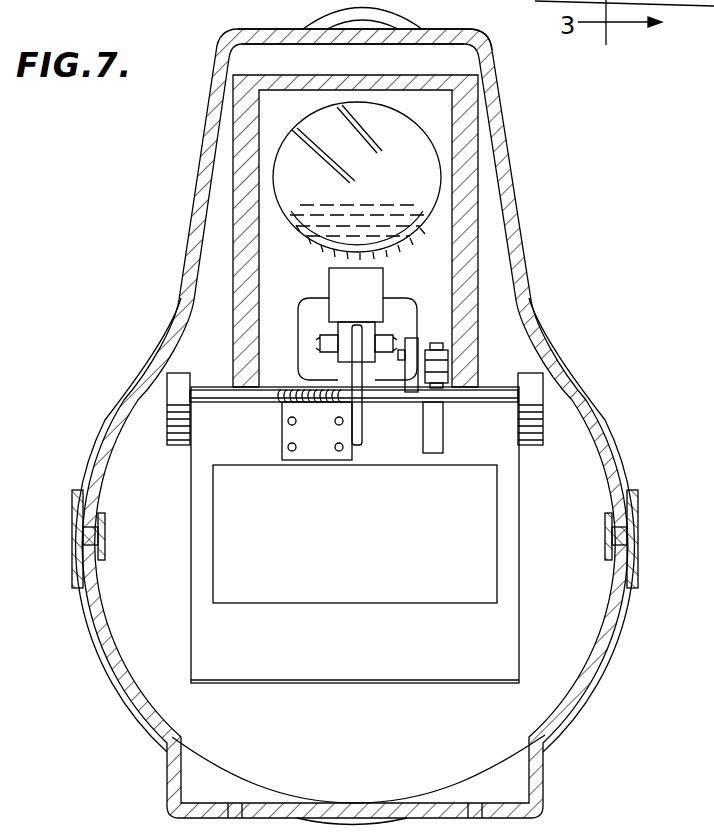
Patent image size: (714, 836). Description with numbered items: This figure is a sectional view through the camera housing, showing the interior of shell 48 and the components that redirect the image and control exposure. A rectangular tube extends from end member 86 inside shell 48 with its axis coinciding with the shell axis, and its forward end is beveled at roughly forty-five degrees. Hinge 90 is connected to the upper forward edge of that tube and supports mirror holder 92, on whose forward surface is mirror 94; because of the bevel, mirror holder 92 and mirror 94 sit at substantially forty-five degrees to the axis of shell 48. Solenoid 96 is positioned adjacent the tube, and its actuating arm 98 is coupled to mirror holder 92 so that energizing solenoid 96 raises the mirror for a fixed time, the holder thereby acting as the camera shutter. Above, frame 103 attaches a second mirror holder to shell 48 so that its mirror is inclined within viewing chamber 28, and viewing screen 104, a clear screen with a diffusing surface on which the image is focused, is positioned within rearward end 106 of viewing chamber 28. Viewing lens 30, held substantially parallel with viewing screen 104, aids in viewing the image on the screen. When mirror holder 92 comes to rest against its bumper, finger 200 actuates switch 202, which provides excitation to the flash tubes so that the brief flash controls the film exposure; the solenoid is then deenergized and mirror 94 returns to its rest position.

The viewing chamber 28 is at (484, 36).
The viewing lens 30 is at (375, 14).
The shell 48 is at (613, 437).
The end member 86 is at (550, 667).
The hinge 90 is at (297, 427).
The mirror holder 92 is at (512, 600).
The mirror 94 is at (428, 578).
The solenoid 96 is at (308, 312).
The actuating arm 98 is at (353, 378).
The frame 103 is at (468, 232).
The viewing screen 104 is at (415, 172).
The rearward end 106 is at (453, 58).
The finger 200 is at (443, 432).
The switch 202 is at (436, 367).